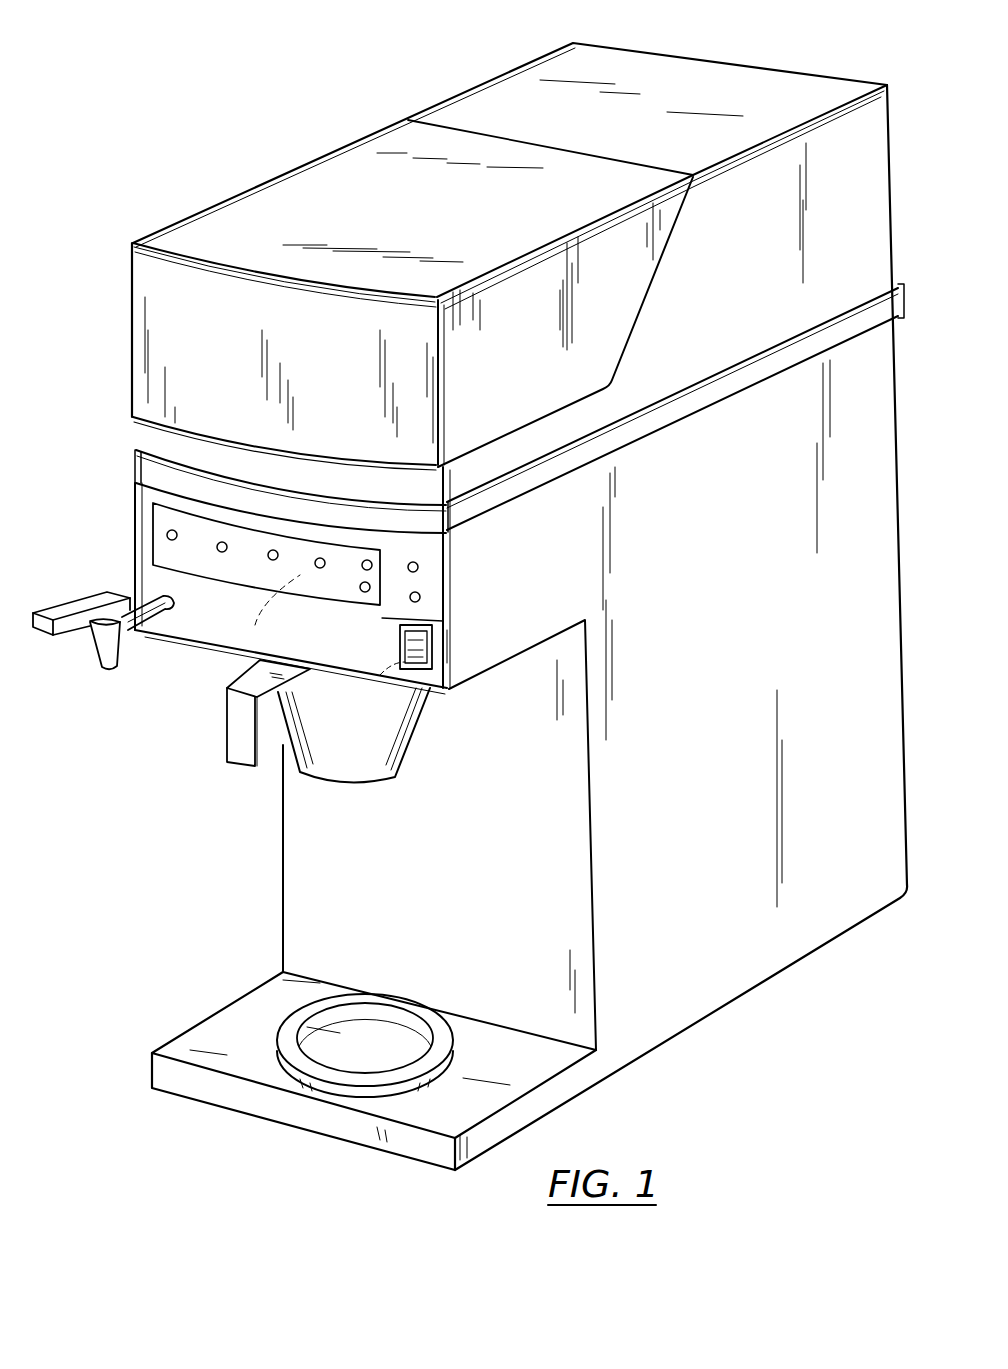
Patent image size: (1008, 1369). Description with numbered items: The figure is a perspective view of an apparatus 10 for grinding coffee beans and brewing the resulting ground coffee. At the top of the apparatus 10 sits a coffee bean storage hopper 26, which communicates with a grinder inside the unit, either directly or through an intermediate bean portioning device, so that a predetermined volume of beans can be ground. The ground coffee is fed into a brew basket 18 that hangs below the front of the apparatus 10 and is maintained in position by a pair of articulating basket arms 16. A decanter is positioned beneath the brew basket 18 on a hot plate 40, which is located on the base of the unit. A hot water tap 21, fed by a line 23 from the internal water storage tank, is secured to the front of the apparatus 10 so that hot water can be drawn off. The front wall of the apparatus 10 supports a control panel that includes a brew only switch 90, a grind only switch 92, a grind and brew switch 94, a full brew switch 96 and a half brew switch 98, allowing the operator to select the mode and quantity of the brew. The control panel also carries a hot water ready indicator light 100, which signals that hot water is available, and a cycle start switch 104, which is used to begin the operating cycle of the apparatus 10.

The apparatus 10 is at (483, 50).
The coffee bean storage hopper 26 is at (145, 323).
The hot water tap 21 is at (90, 650).
The line 23 is at (140, 641).
The brew only switch 90 is at (166, 535).
The grind only switch 92 is at (216, 549).
The grind and brew switch 94 is at (270, 562).
The full brew switch 96 is at (328, 558).
The half brew switch 98 is at (372, 560).
The hot water ready indicator light 100 is at (420, 567).
The articulating basket arms 16 is at (350, 561).
The brew basket 18 is at (310, 770).
The cycle start switch 104 is at (405, 664).
The hot plate 40 is at (377, 1032).